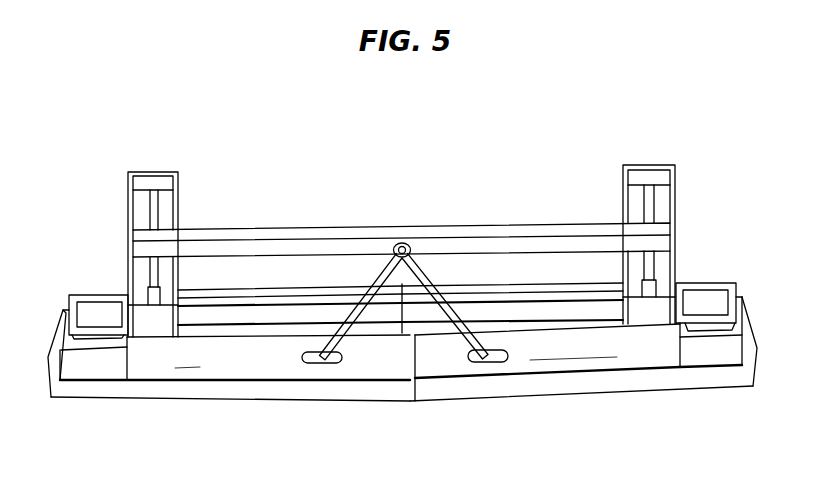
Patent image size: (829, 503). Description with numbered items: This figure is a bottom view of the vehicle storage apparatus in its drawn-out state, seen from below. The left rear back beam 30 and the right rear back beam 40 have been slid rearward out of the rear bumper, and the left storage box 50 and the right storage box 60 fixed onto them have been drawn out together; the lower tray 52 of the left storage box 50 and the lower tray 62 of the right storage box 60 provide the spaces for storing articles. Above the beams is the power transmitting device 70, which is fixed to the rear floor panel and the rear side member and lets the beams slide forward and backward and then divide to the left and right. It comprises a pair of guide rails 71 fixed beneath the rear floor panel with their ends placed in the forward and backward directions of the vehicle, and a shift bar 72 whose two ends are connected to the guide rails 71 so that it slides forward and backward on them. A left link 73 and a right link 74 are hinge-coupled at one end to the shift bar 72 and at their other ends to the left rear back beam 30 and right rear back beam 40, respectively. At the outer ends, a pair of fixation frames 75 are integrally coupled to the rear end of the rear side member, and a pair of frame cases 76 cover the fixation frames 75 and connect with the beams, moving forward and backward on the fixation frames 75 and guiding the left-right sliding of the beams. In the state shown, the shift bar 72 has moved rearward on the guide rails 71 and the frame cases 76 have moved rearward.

The left rear back beam 30 is at (619, 385).
The right rear back beam 40 is at (200, 386).
The left storage box 50 is at (512, 237).
The lower tray 52 is at (516, 282).
The right storage box 60 is at (290, 244).
The lower tray 62 is at (258, 290).
The power transmitting device 70 is at (412, 211).
The guide rail 71 is at (139, 163).
The shift bar 72 is at (403, 243).
The left link 73 is at (475, 340).
The right link 74 is at (328, 365).
The fixation frame 75 is at (93, 312).
The frame case 76 is at (87, 365).